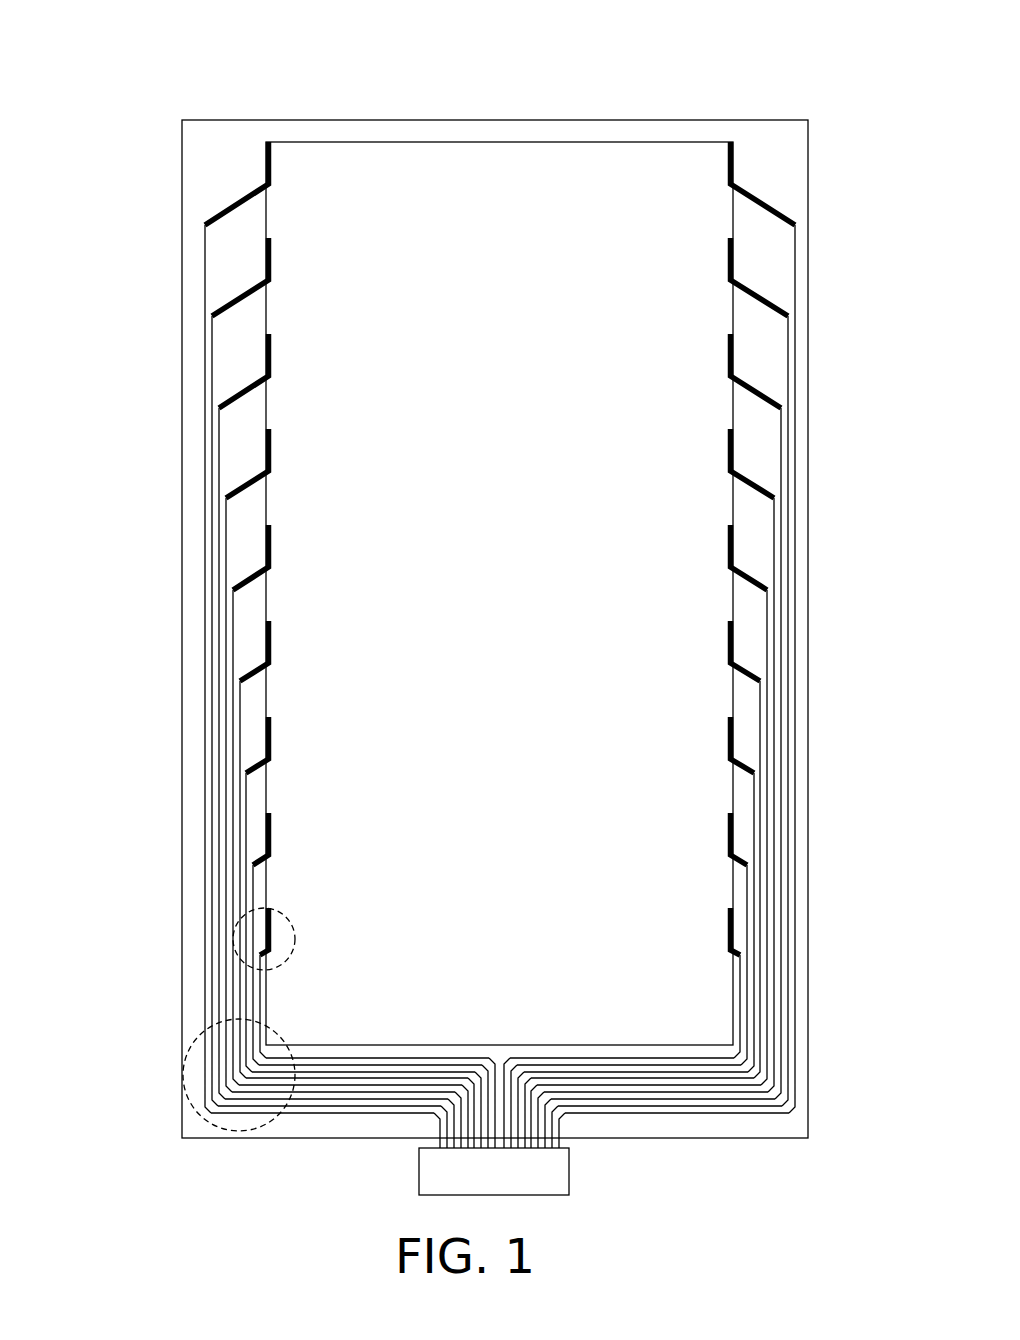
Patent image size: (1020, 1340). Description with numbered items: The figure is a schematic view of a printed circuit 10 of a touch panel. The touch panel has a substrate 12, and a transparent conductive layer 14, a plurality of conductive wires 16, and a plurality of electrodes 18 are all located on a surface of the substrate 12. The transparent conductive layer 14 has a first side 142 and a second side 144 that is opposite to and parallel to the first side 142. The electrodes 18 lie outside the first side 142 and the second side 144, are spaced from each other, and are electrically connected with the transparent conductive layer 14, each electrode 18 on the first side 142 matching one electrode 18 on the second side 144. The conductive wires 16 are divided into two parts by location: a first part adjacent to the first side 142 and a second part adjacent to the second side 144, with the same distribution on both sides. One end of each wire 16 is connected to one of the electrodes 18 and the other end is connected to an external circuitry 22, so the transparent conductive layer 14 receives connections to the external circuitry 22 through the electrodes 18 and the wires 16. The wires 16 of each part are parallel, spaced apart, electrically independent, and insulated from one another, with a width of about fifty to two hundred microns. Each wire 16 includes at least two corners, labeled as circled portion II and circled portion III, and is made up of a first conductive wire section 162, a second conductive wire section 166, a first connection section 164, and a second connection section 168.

The printed circuit 10 is at (490, 60).
The substrate 12 is at (743, 120).
The transparent conductive layer 14 is at (528, 141).
The first side 142 is at (268, 316).
The second side 144 is at (733, 218).
The electrodes 18 is at (243, 551).
The conductive wires 16 is at (413, 692).
The first conductive wire section 162 is at (212, 1006).
The first connection section 164 is at (215, 1112).
The second conductive wire section 166 is at (328, 1108).
The second connection section 168 is at (258, 958).
The external circuitry 22 is at (418, 1172).
The circled portion II is at (247, 1137).
The circled portion III is at (236, 920).